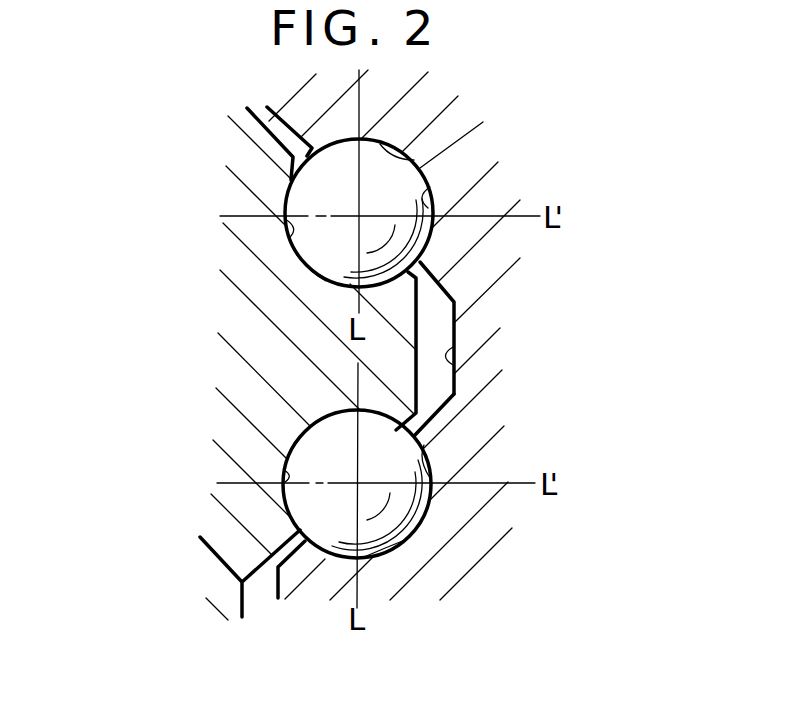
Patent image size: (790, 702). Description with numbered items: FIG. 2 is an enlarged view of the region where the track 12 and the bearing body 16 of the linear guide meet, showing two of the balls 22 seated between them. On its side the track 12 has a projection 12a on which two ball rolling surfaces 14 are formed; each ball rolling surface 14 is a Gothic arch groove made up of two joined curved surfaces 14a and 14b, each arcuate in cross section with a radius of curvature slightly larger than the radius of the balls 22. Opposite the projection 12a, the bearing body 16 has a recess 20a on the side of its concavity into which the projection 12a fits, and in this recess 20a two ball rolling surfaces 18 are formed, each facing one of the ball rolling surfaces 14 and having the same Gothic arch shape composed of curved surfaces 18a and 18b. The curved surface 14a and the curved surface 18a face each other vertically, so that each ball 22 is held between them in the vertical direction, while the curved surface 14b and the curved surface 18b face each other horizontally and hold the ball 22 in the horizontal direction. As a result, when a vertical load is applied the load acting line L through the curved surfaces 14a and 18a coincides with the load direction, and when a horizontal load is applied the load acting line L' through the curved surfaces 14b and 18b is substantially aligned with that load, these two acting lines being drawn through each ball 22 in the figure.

The track 12 is at (227, 358).
The projection 12a is at (398, 384).
The ball rolling surface 14 is at (122, 268).
The curved surface 14a is at (300, 257).
The curved surface 14b is at (298, 262).
The bearing body 16 is at (492, 320).
The ball rolling surface 18 is at (597, 117).
The curved surface 18a is at (415, 169).
The curved surface 18b is at (430, 177).
The recess 20a is at (453, 366).
The ball 22 is at (296, 188).